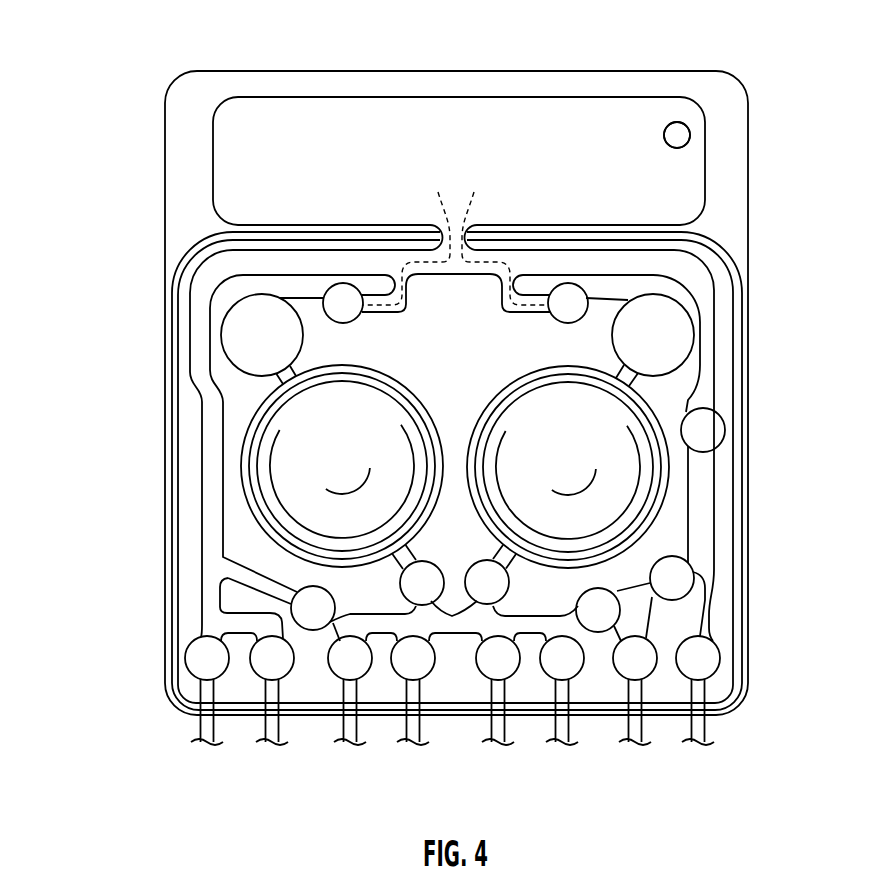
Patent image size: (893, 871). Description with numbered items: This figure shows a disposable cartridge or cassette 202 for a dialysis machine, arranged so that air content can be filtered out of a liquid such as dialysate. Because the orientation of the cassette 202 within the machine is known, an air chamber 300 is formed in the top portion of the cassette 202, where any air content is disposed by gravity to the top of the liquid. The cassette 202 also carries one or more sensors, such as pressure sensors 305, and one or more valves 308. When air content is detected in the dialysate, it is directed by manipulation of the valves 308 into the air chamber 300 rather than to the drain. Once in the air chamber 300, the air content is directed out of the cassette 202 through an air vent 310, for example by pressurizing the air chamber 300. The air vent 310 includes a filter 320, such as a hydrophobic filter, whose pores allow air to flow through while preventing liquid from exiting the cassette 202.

The cassette 202 is at (153, 356).
The air chamber 300 is at (357, 126).
The pressure sensors 305 is at (242, 352).
The valves 308 is at (345, 303).
The air vent 310 is at (693, 123).
The filter 320 is at (693, 123).